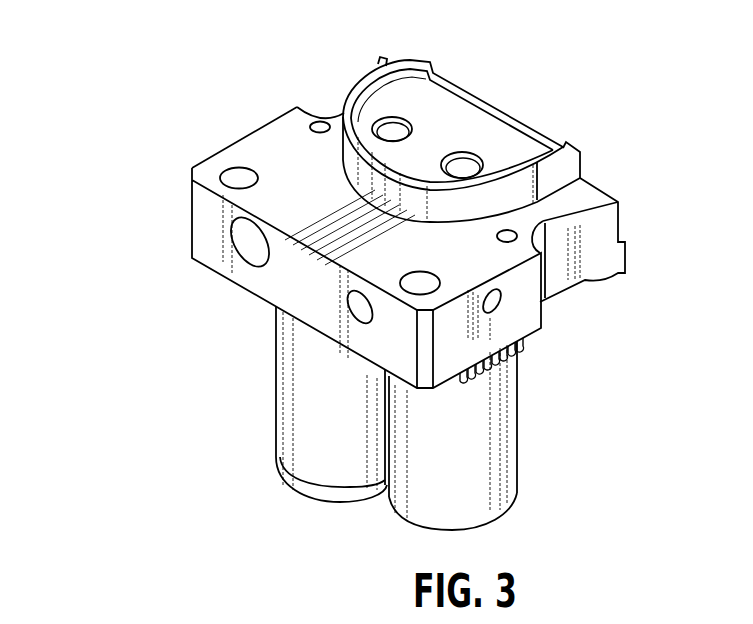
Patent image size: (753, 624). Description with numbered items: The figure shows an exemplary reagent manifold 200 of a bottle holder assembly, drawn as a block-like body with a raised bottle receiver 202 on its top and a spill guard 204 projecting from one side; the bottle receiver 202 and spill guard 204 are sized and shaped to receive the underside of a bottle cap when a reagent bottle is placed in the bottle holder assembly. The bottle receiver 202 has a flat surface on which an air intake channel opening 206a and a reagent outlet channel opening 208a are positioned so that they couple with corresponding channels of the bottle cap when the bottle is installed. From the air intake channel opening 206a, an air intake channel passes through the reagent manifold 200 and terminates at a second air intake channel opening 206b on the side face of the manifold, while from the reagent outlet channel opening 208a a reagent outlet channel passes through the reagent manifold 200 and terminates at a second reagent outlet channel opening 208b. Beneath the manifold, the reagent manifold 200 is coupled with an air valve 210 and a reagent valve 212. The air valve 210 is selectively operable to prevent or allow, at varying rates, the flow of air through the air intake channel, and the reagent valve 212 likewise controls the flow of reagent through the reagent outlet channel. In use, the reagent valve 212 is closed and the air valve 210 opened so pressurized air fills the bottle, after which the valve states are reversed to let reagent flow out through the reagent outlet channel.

The reagent manifold 200 is at (136, 140).
The bottle receiver 202 is at (452, 132).
The spill guard 204 is at (581, 165).
The air intake channel opening 206a is at (398, 123).
The reagent outlet channel opening 208a is at (465, 162).
The air intake channel opening 206b is at (240, 240).
The reagent outlet channel opening 208b is at (355, 300).
The air valve 210 is at (287, 410).
The reagent valve 212 is at (512, 453).